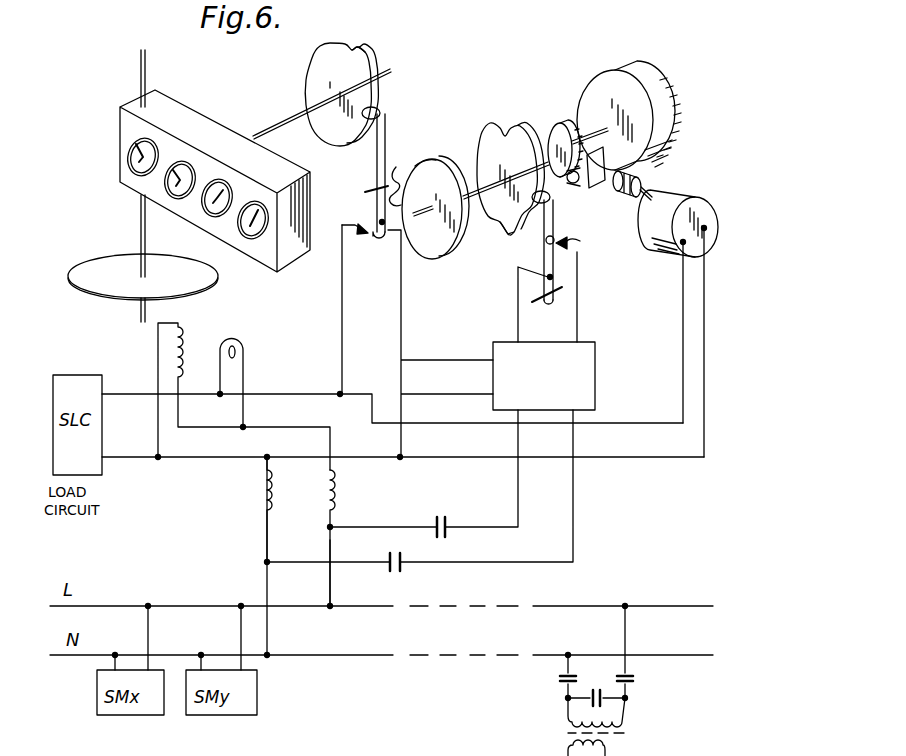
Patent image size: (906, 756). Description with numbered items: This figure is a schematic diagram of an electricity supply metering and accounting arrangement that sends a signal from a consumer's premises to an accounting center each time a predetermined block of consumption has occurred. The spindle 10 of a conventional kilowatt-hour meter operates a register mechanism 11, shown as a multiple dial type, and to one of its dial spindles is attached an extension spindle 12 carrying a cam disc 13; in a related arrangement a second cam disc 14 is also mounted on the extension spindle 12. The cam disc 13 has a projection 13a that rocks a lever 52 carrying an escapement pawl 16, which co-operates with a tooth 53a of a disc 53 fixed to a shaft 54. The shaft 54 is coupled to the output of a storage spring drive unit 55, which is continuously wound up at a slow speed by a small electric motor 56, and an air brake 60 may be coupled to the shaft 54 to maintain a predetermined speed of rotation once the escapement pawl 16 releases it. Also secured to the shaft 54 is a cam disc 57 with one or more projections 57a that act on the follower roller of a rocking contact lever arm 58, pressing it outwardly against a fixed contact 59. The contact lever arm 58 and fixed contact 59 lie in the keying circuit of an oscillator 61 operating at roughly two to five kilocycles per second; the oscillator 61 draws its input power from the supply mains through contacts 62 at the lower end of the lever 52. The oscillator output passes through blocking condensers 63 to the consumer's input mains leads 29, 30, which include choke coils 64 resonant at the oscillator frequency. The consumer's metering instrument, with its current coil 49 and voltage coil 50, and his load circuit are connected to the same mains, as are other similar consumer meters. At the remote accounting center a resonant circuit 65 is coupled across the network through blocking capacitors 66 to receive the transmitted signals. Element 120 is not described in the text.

The spindle 10 is at (140, 219).
The register mechanism 11 is at (212, 130).
The extension spindle 12 is at (290, 125).
The cam disc 13 is at (305, 66).
The projection 13a is at (362, 52).
The escapement pawl 16 is at (396, 168).
The lever 52 is at (384, 130).
The contacts 62 is at (368, 244).
The disc 53 is at (444, 247).
The tooth 53a is at (425, 161).
The shaft 54 is at (470, 200).
The cam disc 57 is at (490, 130).
The projections 57a is at (507, 240).
The rocking contact lever arm 58 is at (554, 215).
The fixed contact 59 is at (580, 287).
The storage spring drive unit 55 is at (637, 73).
The air brake 60 is at (600, 188).
The electric motor 56 is at (661, 239).
The oscillator 61 is at (596, 378).
The current coil 49 is at (229, 346).
The voltage coil 50 is at (176, 351).
The blocking condensers 63 is at (401, 556).
The choke coils 64 is at (326, 483).
The resonant circuit 65 is at (606, 746).
The blocking capacitors 66 is at (560, 680).
The mains lead 29 is at (332, 586).
The mains lead 30 is at (266, 586).
The second cam disc 14 is at (273, 747).
The element 120 is at (346, 755).